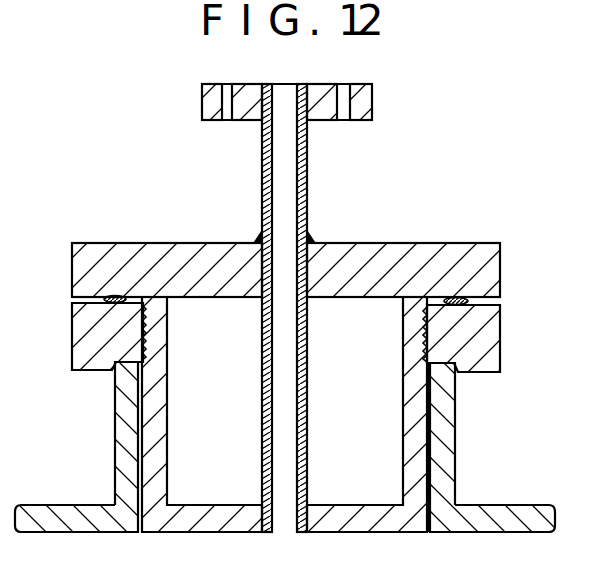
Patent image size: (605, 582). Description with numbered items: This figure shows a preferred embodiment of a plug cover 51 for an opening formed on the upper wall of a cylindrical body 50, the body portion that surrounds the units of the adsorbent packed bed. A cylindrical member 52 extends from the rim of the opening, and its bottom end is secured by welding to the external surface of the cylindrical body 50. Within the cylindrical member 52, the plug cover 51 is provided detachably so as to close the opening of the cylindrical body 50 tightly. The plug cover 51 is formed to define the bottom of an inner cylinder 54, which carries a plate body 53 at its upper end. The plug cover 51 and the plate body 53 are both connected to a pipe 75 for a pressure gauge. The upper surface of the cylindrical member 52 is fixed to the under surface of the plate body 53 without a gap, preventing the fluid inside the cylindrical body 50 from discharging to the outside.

The pipe for a pressure gauge 75 is at (262, 172).
The plate body 53 is at (410, 251).
The inner cylinder 54 is at (407, 357).
The cylindrical member 52 is at (440, 438).
The plug cover 51 is at (187, 518).
The cylindrical body 50 is at (448, 520).